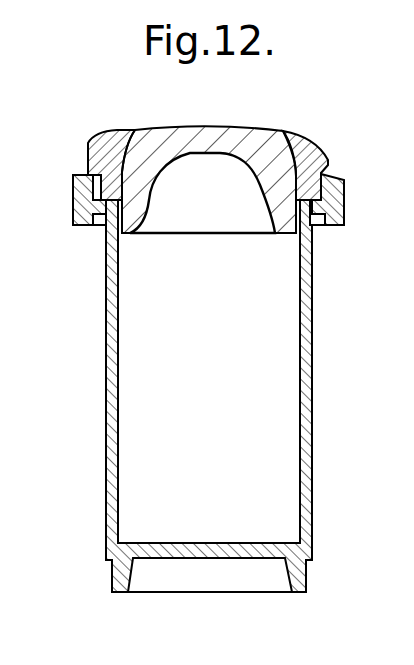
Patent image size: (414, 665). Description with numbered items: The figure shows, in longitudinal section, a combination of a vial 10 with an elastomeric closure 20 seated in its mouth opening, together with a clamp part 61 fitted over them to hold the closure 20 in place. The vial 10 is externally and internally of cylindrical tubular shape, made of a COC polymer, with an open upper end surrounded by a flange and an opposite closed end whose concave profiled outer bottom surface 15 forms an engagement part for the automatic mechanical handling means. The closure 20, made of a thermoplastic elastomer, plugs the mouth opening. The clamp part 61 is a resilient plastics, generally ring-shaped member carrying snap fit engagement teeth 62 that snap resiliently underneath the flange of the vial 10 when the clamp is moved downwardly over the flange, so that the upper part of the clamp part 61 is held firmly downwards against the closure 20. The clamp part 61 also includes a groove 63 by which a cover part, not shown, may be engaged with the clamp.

The vial 10 is at (305, 431).
The concave profiled outer bottom surface 15 is at (212, 577).
The elastomeric closure 20 is at (138, 159).
The clamp part 61 is at (110, 152).
The snap fit engagement teeth 62 is at (322, 226).
The groove 63 is at (328, 164).